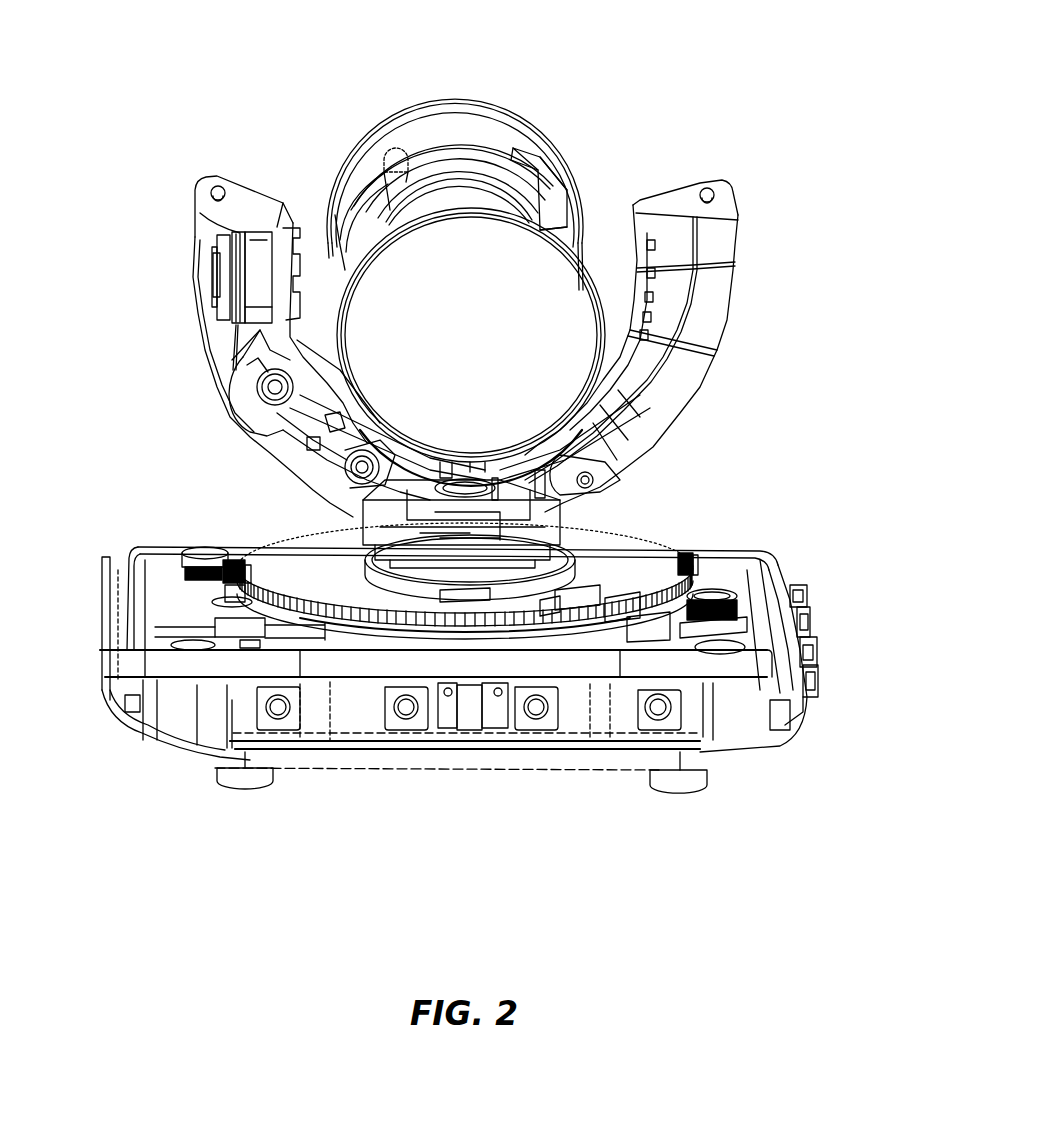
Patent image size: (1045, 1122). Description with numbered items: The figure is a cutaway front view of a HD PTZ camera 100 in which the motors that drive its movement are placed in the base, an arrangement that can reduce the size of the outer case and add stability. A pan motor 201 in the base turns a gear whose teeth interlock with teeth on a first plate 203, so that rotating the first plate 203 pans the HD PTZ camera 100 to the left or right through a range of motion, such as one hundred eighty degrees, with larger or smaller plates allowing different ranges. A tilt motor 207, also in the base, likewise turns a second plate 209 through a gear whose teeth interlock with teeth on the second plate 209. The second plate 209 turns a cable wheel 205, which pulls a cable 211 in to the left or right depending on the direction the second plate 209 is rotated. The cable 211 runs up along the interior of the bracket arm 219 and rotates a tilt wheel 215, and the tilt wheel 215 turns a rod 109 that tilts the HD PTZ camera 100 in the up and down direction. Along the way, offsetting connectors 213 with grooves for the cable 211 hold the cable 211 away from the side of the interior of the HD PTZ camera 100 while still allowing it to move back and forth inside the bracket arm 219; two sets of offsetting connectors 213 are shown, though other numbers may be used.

The HD PTZ camera 100 is at (648, 70).
The rod 109 is at (320, 264).
The pan motor 201 is at (692, 553).
The first plate 203 is at (615, 550).
The cable wheel 205 is at (517, 517).
The tilt motor 207 is at (225, 587).
The second plate 209 is at (310, 563).
The cable 211 is at (258, 435).
The offsetting connectors 213 is at (252, 402).
The tilt wheel 215 is at (236, 280).
The bracket arm 219 is at (258, 208).